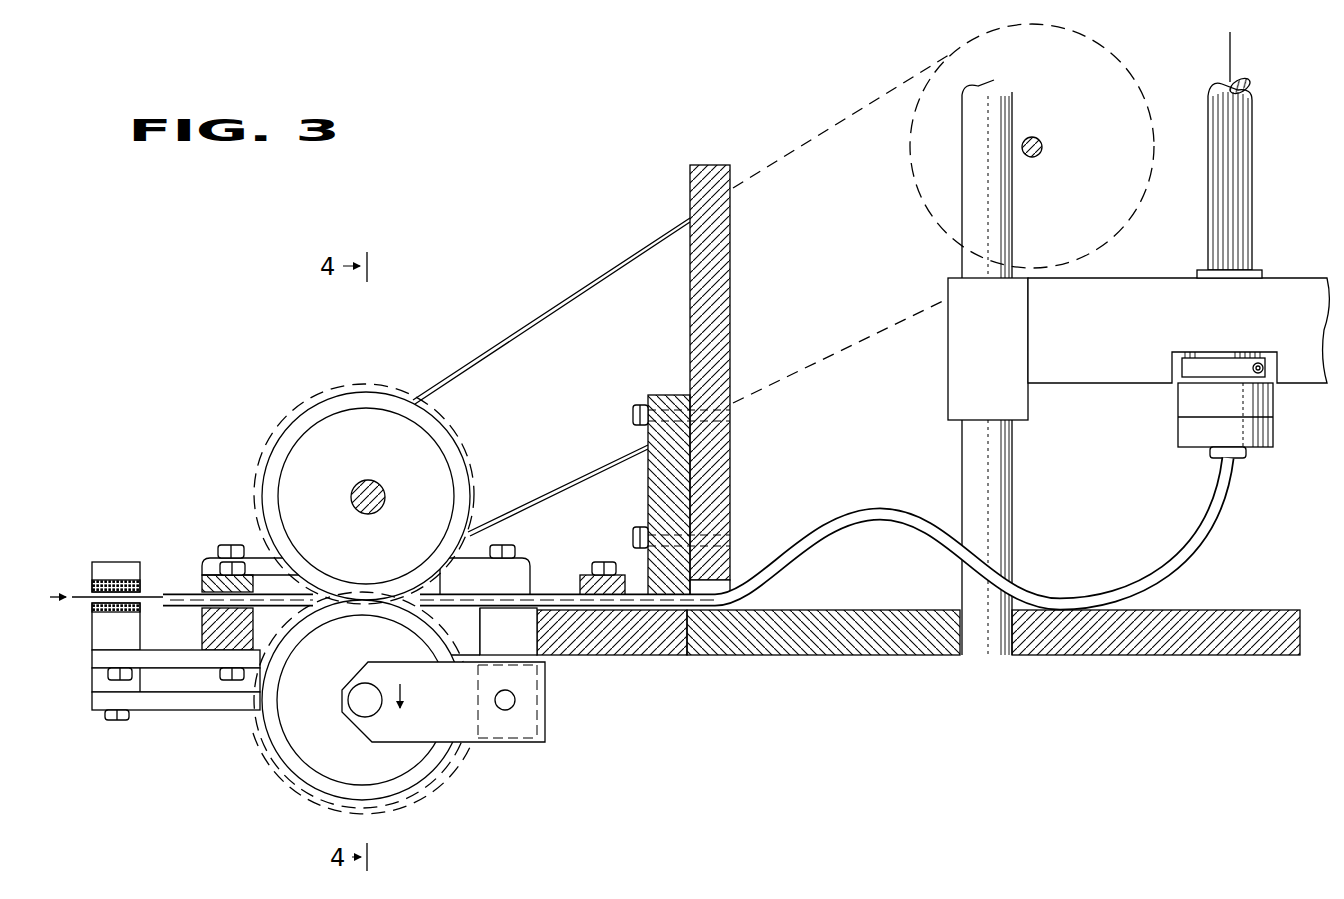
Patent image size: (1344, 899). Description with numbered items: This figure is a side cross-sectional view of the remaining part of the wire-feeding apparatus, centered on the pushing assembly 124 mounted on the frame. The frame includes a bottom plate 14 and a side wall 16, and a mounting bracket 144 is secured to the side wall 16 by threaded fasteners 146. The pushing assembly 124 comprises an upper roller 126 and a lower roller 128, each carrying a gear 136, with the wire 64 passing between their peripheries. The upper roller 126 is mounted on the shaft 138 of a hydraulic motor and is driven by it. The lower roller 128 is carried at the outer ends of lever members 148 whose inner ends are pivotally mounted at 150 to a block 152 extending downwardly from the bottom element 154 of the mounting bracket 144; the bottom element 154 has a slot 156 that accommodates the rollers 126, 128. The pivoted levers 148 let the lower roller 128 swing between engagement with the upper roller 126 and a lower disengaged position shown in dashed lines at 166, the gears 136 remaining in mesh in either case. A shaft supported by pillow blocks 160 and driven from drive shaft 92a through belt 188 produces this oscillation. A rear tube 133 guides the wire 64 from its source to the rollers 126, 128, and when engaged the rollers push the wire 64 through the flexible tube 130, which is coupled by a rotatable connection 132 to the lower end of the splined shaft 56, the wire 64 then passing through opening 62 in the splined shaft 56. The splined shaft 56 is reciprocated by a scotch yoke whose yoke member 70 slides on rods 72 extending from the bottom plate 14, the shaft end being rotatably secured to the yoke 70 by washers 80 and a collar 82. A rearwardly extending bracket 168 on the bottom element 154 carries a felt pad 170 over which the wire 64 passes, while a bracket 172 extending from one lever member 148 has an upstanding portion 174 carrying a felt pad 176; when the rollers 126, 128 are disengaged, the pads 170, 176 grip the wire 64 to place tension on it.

The bottom plate 14 is at (918, 626).
The side wall 16 is at (731, 216).
The splined shaft 56 is at (1254, 186).
The opening 62 is at (1250, 84).
The wire 64 is at (1233, 43).
The yoke member 70 is at (1290, 278).
The rod 72 is at (1014, 476).
The washer 80 is at (1212, 356).
The collar 82 is at (1258, 363).
The drive shaft 92a is at (1040, 140).
The pushing assembly 124 is at (346, 465).
The upper roller 126 is at (384, 454).
The lower roller 128 is at (380, 650).
The flexible tube 130 is at (1232, 490).
The rotatable connection 132 is at (1168, 406).
The rear tube 133 is at (178, 594).
The gear 136 is at (468, 426).
The shaft 138 is at (383, 496).
The mounting bracket 144 is at (651, 470).
The threaded fastener 146 is at (640, 412).
The lever member 148 is at (462, 724).
The pivot 150 is at (516, 700).
The block 152 is at (522, 648).
The bottom element 154 is at (640, 646).
The slot 156 is at (458, 622).
The pillow block 160 is at (233, 558).
The disengaged position 166 is at (272, 780).
The rearwardly extending bracket 168 is at (100, 660).
The felt pad 170 is at (92, 606).
The bracket 172 is at (155, 706).
The upstanding portion 174 is at (93, 677).
The felt pad 176 is at (120, 580).
The belt 188 is at (626, 262).